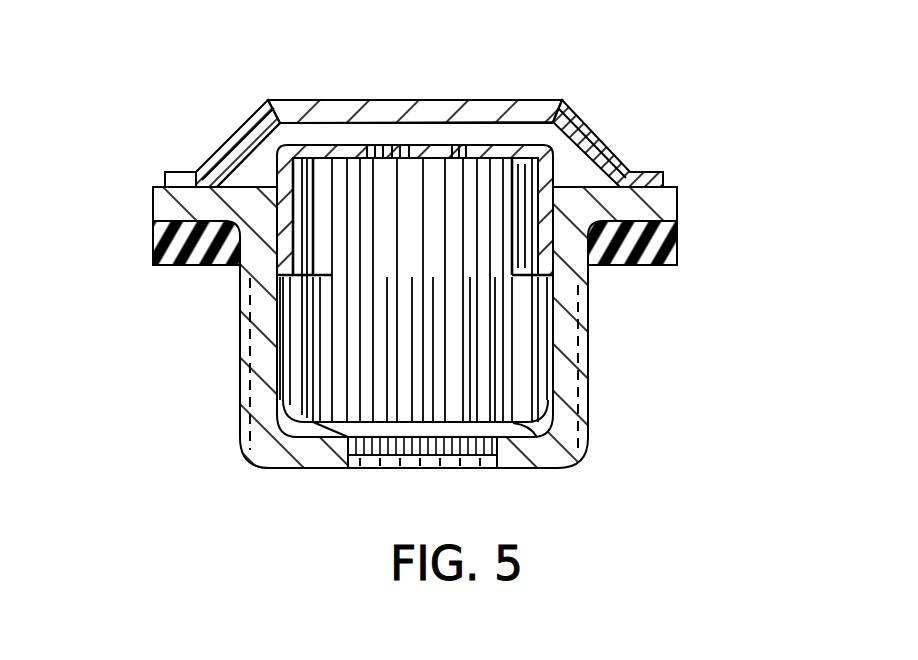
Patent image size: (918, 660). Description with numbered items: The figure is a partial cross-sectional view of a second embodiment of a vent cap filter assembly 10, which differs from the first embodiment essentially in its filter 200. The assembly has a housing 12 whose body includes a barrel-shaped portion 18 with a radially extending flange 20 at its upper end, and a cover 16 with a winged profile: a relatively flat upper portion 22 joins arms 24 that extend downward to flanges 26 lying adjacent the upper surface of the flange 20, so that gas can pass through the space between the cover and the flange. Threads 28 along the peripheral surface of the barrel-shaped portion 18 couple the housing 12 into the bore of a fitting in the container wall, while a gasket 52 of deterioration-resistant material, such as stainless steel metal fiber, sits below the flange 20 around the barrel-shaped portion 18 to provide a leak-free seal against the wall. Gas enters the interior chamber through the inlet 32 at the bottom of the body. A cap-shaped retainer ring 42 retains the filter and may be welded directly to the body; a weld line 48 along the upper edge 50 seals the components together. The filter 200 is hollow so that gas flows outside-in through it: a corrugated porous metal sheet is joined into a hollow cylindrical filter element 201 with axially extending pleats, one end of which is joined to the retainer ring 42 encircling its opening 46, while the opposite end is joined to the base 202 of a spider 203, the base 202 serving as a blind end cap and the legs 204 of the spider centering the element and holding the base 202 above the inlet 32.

The filter assembly 10 is at (630, 111).
The housing 12 is at (690, 202).
The cover 16 is at (664, 178).
The barrel-shaped portion 18 is at (590, 430).
The flange 20 is at (153, 207).
The flat upper portion 22 is at (308, 102).
The arms 24 is at (262, 150).
The flanges 26 is at (165, 177).
The threads 28 is at (588, 388).
The inlet 32 is at (355, 468).
The retainer ring 42 is at (564, 101).
The opening 46 is at (448, 150).
The weld line 48 is at (599, 156).
The upper edge 50 is at (238, 167).
The gasket 52 is at (678, 240).
The filter 200 is at (510, 348).
The filter element 201 is at (430, 320).
The base 202 is at (385, 420).
The spider 203 is at (497, 440).
The legs 204 is at (277, 403).